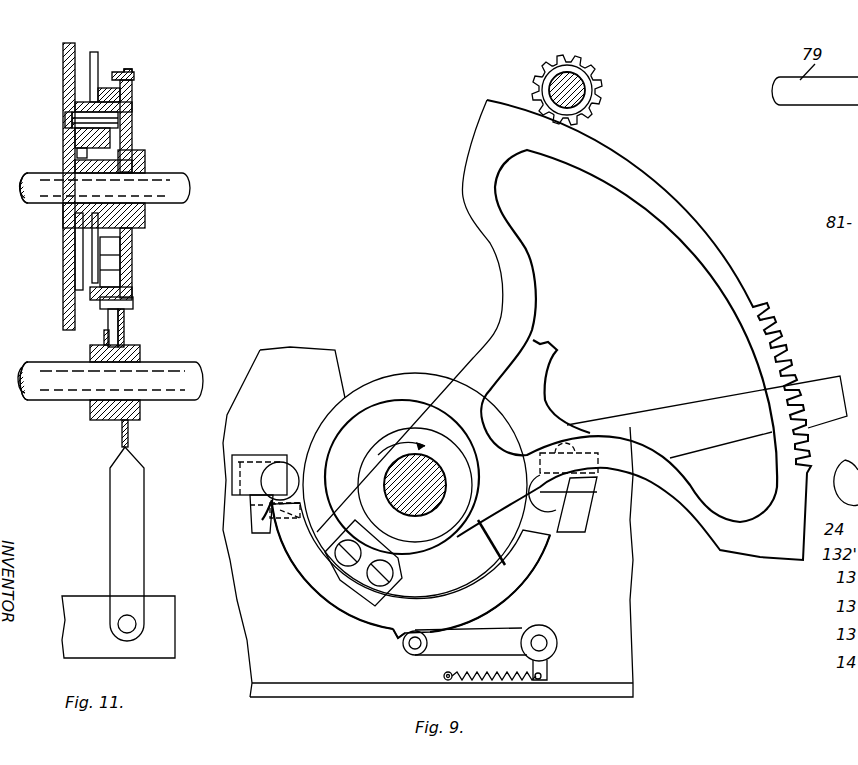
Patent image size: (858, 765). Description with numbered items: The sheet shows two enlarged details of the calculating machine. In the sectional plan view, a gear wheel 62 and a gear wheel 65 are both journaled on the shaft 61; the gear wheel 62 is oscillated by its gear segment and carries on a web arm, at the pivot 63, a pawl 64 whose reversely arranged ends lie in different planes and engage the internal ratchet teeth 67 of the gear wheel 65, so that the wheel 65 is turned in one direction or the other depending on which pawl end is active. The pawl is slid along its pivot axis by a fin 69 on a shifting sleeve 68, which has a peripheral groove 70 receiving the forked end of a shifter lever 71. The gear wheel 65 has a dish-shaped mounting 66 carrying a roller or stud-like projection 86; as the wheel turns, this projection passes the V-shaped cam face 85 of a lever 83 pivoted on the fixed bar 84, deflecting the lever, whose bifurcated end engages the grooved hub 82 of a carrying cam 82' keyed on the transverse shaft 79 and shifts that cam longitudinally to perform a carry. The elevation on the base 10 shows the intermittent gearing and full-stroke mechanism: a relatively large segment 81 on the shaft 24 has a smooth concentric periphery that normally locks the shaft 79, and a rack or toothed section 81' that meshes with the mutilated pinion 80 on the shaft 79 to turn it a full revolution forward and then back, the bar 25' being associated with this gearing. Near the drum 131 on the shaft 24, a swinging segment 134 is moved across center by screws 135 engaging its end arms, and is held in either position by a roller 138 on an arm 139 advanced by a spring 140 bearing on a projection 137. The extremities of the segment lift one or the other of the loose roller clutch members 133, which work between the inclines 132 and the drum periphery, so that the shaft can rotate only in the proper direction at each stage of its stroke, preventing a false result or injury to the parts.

In FIG. 9, the base plate 10 is at (605, 636).
In FIG. 9, the shaft 24 is at (412, 480).
In FIG. 9, the bar 25' is at (707, 417).
In FIG. 11, the shaft 61 is at (178, 187).
In FIG. 11, the gear wheel 62 is at (66, 70).
In FIG. 11, the pivot 63 is at (64, 120).
In FIG. 11, the pawl 64 is at (74, 137).
In FIG. 11, the gear wheel 65 is at (100, 58).
In FIG. 11, the dish-shaped mounting 66 is at (132, 110).
In FIG. 11, the internal ratchet teeth 67 is at (92, 270).
In FIG. 11, the shifting sleeve 68 is at (76, 166).
In FIG. 11, the fin 69 is at (105, 240).
In FIG. 11, the peripheral groove 70 is at (76, 153).
In FIG. 11, the shifter lever 71 is at (74, 252).
In FIG. 11, the transverse shaft 79 is at (190, 372).
In FIG. 9, the transverse shaft 79 is at (552, 82).
In FIG. 9, the mutilated pinion 80 is at (598, 76).
In FIG. 9, the segment 81 is at (564, 330).
In FIG. 9, the rack or toothed section 81' is at (810, 331).
In FIG. 11, the hub 82 is at (135, 376).
In FIG. 11, the carrying cam 82' is at (79, 388).
In FIG. 11, the lever 83 is at (127, 544).
In FIG. 11, the fixed bar 84 is at (118, 627).
In FIG. 11, the V-shaped cam face 85 is at (133, 304).
In FIG. 11, the roller or stud-like projection 86 is at (128, 78).
In FIG. 9, the drum 131 is at (405, 375).
In FIG. 9, the inclines 132 is at (248, 515).
In FIG. 9, the clutch members 133 is at (272, 462).
In FIG. 9, the swinging segment 134 is at (520, 578).
In FIG. 9, the screws 135 is at (378, 585).
In FIG. 9, the projection 137 is at (395, 638).
In FIG. 9, the roller 138 is at (414, 655).
In FIG. 9, the arm 139 is at (505, 630).
In FIG. 9, the spring 140 is at (505, 672).